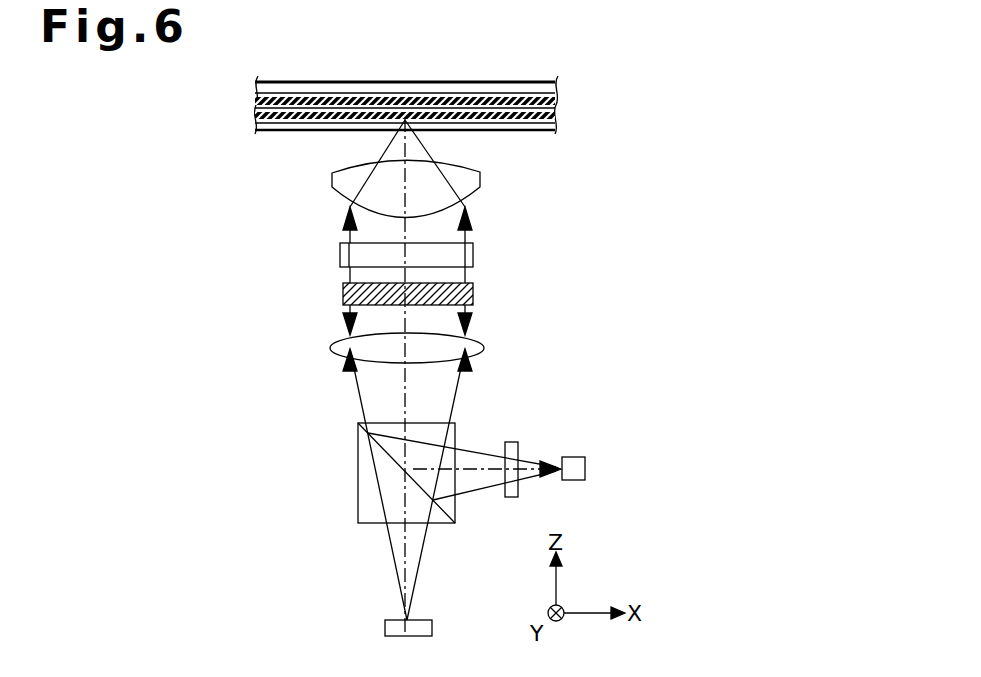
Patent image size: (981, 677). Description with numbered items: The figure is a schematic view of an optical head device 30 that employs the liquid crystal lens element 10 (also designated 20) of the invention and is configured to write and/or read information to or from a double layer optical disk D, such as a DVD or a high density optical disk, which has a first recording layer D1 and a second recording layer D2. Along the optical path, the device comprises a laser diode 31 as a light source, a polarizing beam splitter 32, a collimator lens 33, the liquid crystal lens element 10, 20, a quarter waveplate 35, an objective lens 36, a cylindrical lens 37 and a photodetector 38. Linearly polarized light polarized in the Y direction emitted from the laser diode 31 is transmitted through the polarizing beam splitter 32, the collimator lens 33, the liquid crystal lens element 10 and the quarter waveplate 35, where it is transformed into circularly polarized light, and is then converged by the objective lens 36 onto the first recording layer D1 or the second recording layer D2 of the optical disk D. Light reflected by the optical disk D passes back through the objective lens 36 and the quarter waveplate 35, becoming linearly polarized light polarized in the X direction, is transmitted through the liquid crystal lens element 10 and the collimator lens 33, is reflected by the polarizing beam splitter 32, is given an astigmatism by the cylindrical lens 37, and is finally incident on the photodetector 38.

The double layer optical disk D is at (426, 126).
The first recording layer D1 is at (472, 121).
The second recording layer D2 is at (514, 106).
The optical head device 30 is at (437, 382).
The laser diode 31 is at (392, 628).
The polarizing beam splitter 32 is at (358, 438).
The collimator lens 33 is at (340, 350).
The liquid crystal lens element 10 is at (343, 293).
The liquid crystal lens element 20 is at (343, 297).
The quarter waveplate 35 is at (340, 250).
The objective lens 36 is at (333, 182).
The cylindrical lens 37 is at (519, 442).
The photodetector 38 is at (585, 468).